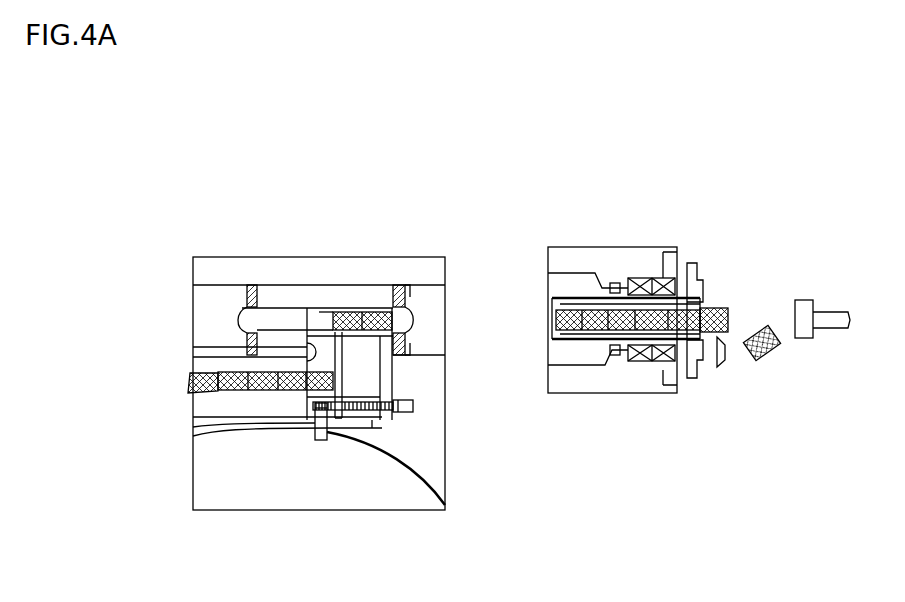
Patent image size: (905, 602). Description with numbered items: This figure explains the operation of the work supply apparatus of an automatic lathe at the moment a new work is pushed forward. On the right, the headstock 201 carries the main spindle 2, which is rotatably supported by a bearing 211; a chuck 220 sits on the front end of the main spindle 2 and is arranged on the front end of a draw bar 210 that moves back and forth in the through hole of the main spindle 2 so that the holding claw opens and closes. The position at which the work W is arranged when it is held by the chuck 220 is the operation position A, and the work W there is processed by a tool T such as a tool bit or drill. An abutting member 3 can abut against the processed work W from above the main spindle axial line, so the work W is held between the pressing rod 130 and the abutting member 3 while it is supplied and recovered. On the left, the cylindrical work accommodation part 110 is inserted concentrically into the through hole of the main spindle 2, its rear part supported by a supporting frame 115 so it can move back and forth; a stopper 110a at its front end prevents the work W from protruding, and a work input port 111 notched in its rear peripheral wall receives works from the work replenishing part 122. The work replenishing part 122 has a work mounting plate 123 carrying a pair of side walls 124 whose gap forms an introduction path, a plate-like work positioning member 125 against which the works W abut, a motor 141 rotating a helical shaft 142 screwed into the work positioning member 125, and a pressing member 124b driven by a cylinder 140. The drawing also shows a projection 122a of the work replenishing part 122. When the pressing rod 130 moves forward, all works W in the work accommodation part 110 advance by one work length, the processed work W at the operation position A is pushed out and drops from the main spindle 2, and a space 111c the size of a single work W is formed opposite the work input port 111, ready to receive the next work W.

The supporting frame 115 is at (207, 313).
The pressing rod 130 is at (249, 322).
The work input port 111 is at (252, 302).
The work accommodation part 110 is at (277, 302).
The space 111c is at (320, 316).
The work replenishing part 122 is at (323, 337).
The gripping projection 122a is at (250, 344).
The work W is at (375, 312).
The work positioning member 125 is at (342, 360).
The pressing member 124b is at (368, 395).
The motor 141 is at (403, 412).
The cylinder 140 is at (325, 440).
The side walls 124 is at (218, 408).
The helical shaft 142 is at (373, 427).
The work mounting plate 123 is at (200, 475).
The headstock 201 is at (553, 251).
The main spindle 2 is at (607, 283).
The bearing 211 is at (661, 363).
The draw bar 210 is at (613, 345).
The stopper 110a is at (688, 300).
The chuck 220 is at (715, 300).
The operation position A is at (738, 298).
The tool T is at (722, 368).
The abutting member 3 is at (800, 305).